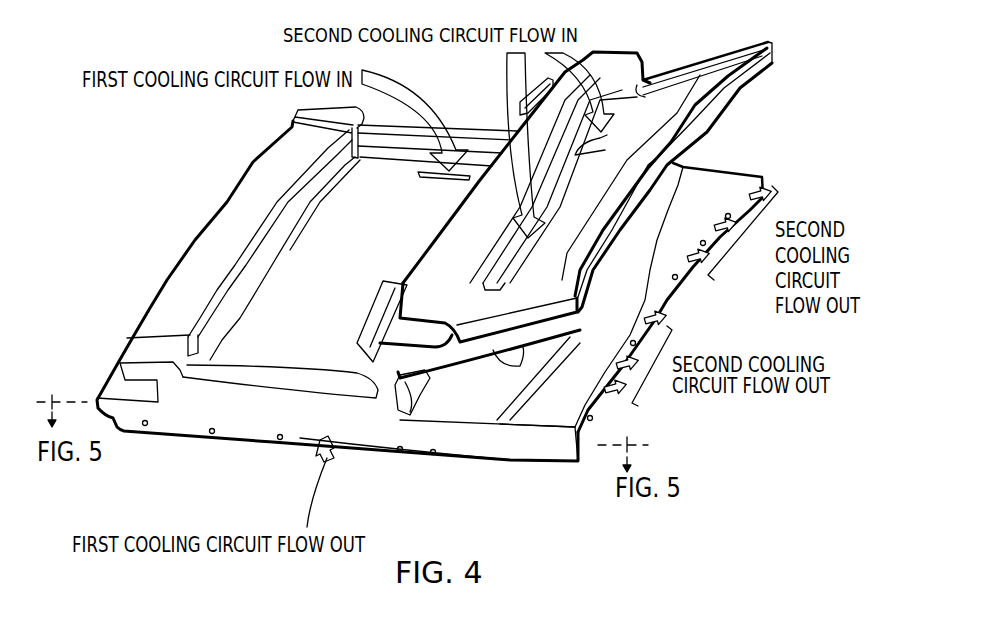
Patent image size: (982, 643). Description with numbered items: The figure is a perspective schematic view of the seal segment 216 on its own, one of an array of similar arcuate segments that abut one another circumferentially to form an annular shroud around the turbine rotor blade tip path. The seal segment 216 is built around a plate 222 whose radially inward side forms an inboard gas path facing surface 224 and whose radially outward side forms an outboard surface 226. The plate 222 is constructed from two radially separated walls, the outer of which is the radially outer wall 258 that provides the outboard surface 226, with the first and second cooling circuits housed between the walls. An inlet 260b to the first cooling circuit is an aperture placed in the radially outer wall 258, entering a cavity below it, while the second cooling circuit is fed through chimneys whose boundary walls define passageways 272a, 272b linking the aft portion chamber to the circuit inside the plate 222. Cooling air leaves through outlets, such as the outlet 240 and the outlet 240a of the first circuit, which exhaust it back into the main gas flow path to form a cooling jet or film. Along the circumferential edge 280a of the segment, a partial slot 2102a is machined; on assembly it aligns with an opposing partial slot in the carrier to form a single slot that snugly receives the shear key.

The outboard surface 226 is at (296, 244).
The radially outer wall 258 is at (338, 295).
The partial slot 2102a is at (357, 343).
The inlet 260b is at (437, 177).
The passageway 272b is at (643, 67).
The passageway 272a is at (516, 259).
The outlet 240 is at (203, 437).
The outlet 240a is at (277, 434).
The seal segment 216 is at (306, 430).
The plate 222 is at (383, 455).
The inboard gas path facing surface 224 is at (453, 462).
The circumferential edge 280a is at (510, 448).